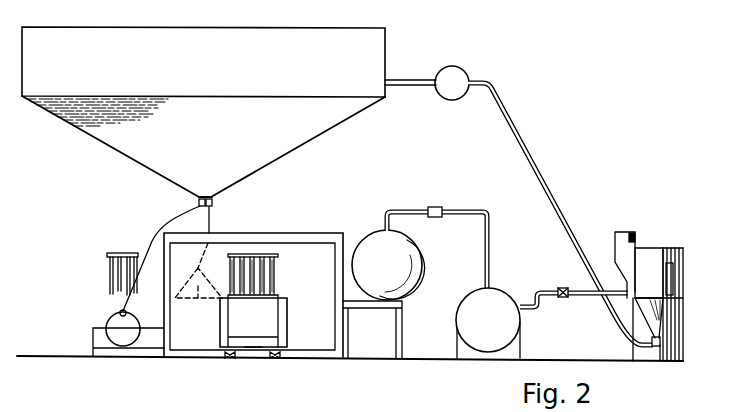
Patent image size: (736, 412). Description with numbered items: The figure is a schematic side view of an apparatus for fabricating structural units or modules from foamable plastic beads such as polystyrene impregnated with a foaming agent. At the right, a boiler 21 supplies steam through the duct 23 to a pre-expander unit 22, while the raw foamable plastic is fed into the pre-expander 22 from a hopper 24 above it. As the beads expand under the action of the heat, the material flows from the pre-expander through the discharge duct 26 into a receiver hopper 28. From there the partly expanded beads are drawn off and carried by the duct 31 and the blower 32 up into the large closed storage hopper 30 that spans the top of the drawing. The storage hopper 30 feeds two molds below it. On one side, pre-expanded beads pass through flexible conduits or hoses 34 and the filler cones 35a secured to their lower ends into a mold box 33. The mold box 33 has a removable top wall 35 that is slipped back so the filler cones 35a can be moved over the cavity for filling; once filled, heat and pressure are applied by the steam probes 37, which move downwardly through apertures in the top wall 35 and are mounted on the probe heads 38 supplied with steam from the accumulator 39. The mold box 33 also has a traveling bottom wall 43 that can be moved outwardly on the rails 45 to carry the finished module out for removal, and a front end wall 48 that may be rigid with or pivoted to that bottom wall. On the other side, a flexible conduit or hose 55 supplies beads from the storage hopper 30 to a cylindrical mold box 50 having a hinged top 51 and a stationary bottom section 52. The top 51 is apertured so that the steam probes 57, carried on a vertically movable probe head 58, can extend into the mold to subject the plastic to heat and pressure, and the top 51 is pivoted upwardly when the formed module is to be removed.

The closed storage hopper 30 is at (389, 39).
The blower 32 is at (466, 73).
The duct 31 is at (516, 136).
The mold box 33 is at (214, 340).
The flexible conduits or hoses 34 is at (211, 211).
The removable top wall 35 is at (277, 298).
The filler cones 35a is at (198, 294).
The steam probes 37 is at (279, 268).
The probe heads 38 is at (258, 254).
The accumulator 39 is at (415, 262).
The boiler 21 is at (499, 300).
The duct 23 is at (580, 298).
The hopper 24 is at (636, 240).
The discharge duct 26 is at (674, 276).
The receiver hopper 28 is at (677, 305).
The pre-expander unit 22 is at (680, 331).
The traveling bottom wall 43 is at (253, 344).
The rails 45 is at (226, 358).
The front end wall 48 is at (270, 321).
The cylindrical mold box 50 is at (113, 347).
The hinged top 51 is at (118, 315).
The stationary bottom section 52 is at (130, 339).
The flexible conduit or hose 55 is at (152, 244).
The steam probes 57 is at (110, 268).
The probe head 58 is at (110, 253).